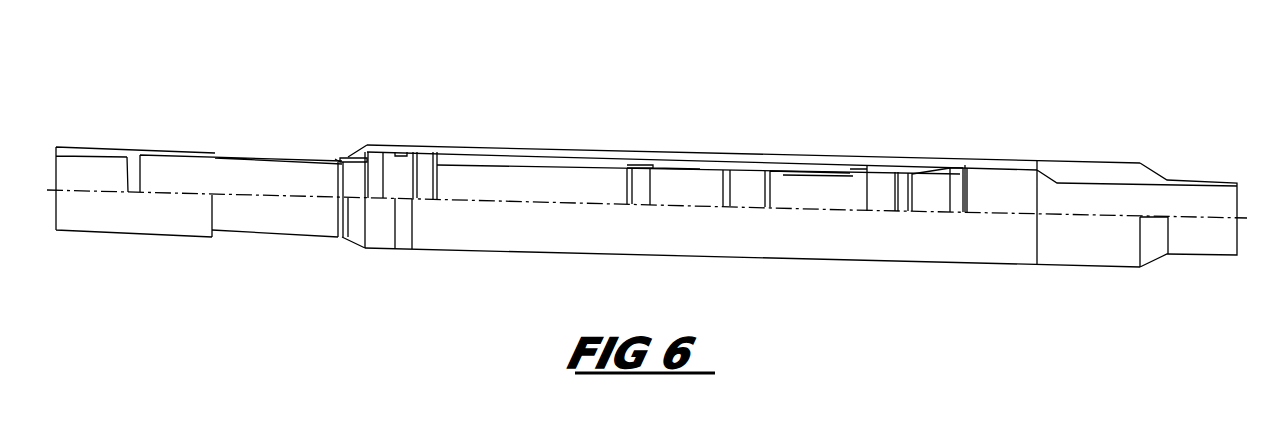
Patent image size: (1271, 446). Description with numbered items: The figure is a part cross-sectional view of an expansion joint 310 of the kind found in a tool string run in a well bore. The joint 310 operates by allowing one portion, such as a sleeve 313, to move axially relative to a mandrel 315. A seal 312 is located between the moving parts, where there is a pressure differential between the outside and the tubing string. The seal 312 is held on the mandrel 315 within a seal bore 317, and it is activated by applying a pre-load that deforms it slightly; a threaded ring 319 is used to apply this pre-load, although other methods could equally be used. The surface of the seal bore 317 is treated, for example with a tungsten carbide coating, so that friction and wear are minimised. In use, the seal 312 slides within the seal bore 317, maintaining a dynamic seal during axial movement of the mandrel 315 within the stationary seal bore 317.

The expansion joint 310 is at (985, 123).
The mandrel 315 is at (237, 157).
The seal bore 317 is at (548, 150).
The seal 312 is at (696, 165).
The threaded ring 319 is at (777, 163).
The sleeve 313 is at (1097, 161).